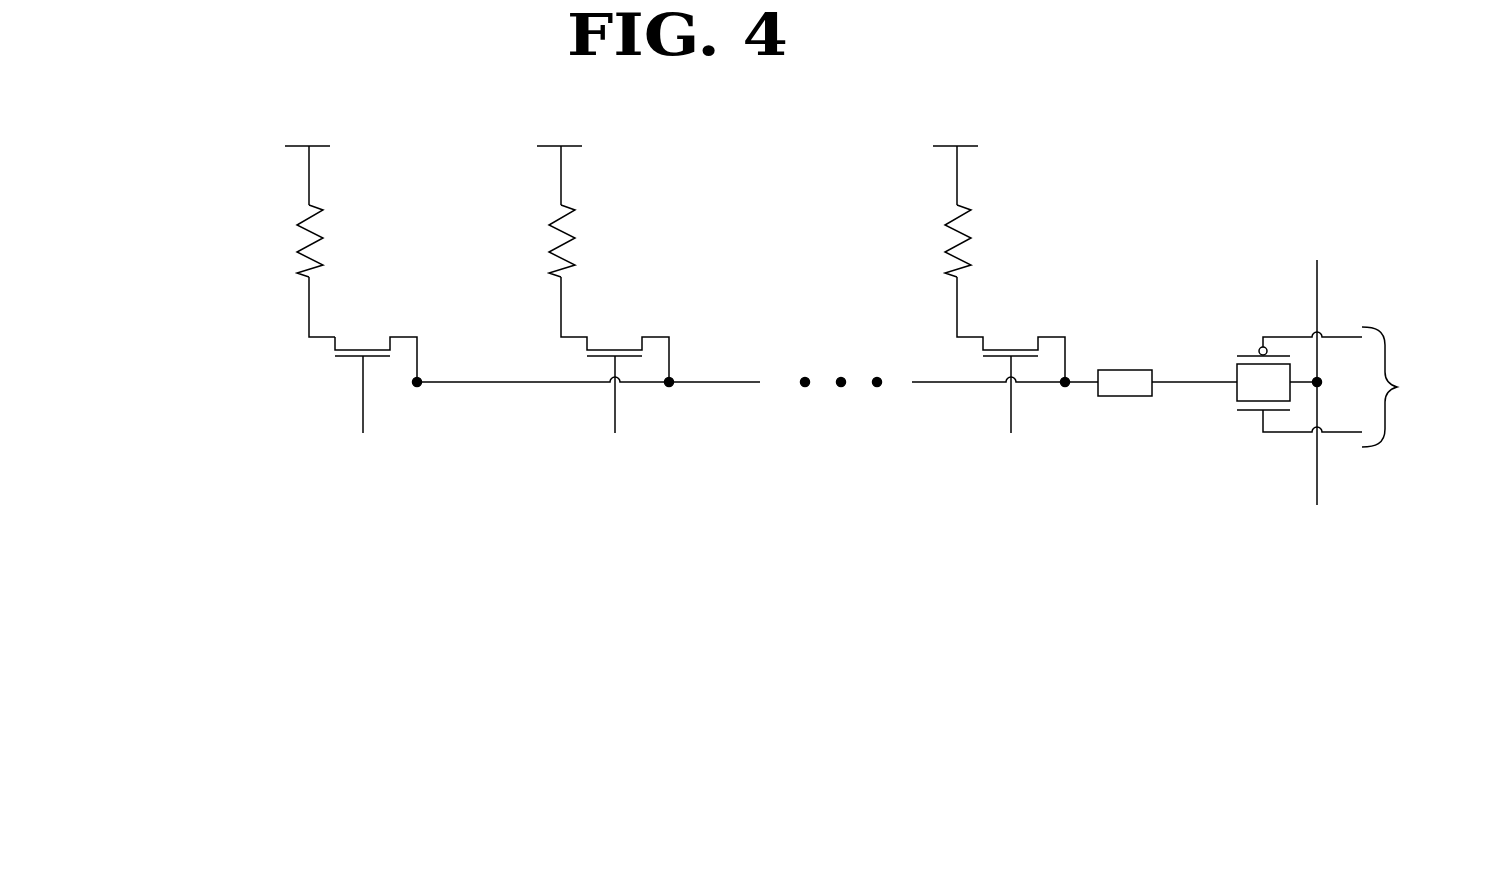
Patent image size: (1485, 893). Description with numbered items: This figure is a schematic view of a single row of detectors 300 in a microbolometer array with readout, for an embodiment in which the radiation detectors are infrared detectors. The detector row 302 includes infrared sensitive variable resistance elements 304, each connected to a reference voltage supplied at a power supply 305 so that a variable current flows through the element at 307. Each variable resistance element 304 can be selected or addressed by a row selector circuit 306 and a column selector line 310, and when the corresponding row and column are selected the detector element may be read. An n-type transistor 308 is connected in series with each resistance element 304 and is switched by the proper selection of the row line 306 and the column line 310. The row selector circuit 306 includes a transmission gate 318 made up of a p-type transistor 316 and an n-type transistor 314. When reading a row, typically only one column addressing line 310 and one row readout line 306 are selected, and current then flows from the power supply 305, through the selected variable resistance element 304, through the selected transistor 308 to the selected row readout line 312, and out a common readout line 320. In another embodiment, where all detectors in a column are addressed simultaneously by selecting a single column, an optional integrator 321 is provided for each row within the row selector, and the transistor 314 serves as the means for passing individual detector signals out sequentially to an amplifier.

The row of detectors 300 is at (1245, 229).
The detector row 302 is at (278, 312).
The infrared sensitive variable resistance element 304 is at (322, 232).
The reference voltage / power supply 305 is at (297, 148).
The row selector circuit 306 is at (1397, 387).
The variable current 307 is at (315, 340).
The n-type transistor 308 is at (363, 351).
The column selector line 310 is at (362, 410).
The row readout line 312 is at (712, 383).
The n-type transistor 314 is at (1262, 422).
The p-type transistor 316 is at (1258, 350).
The transmission gate 318 is at (1223, 362).
The common readout line 320 is at (1317, 312).
The optional integrator 321 is at (1115, 397).